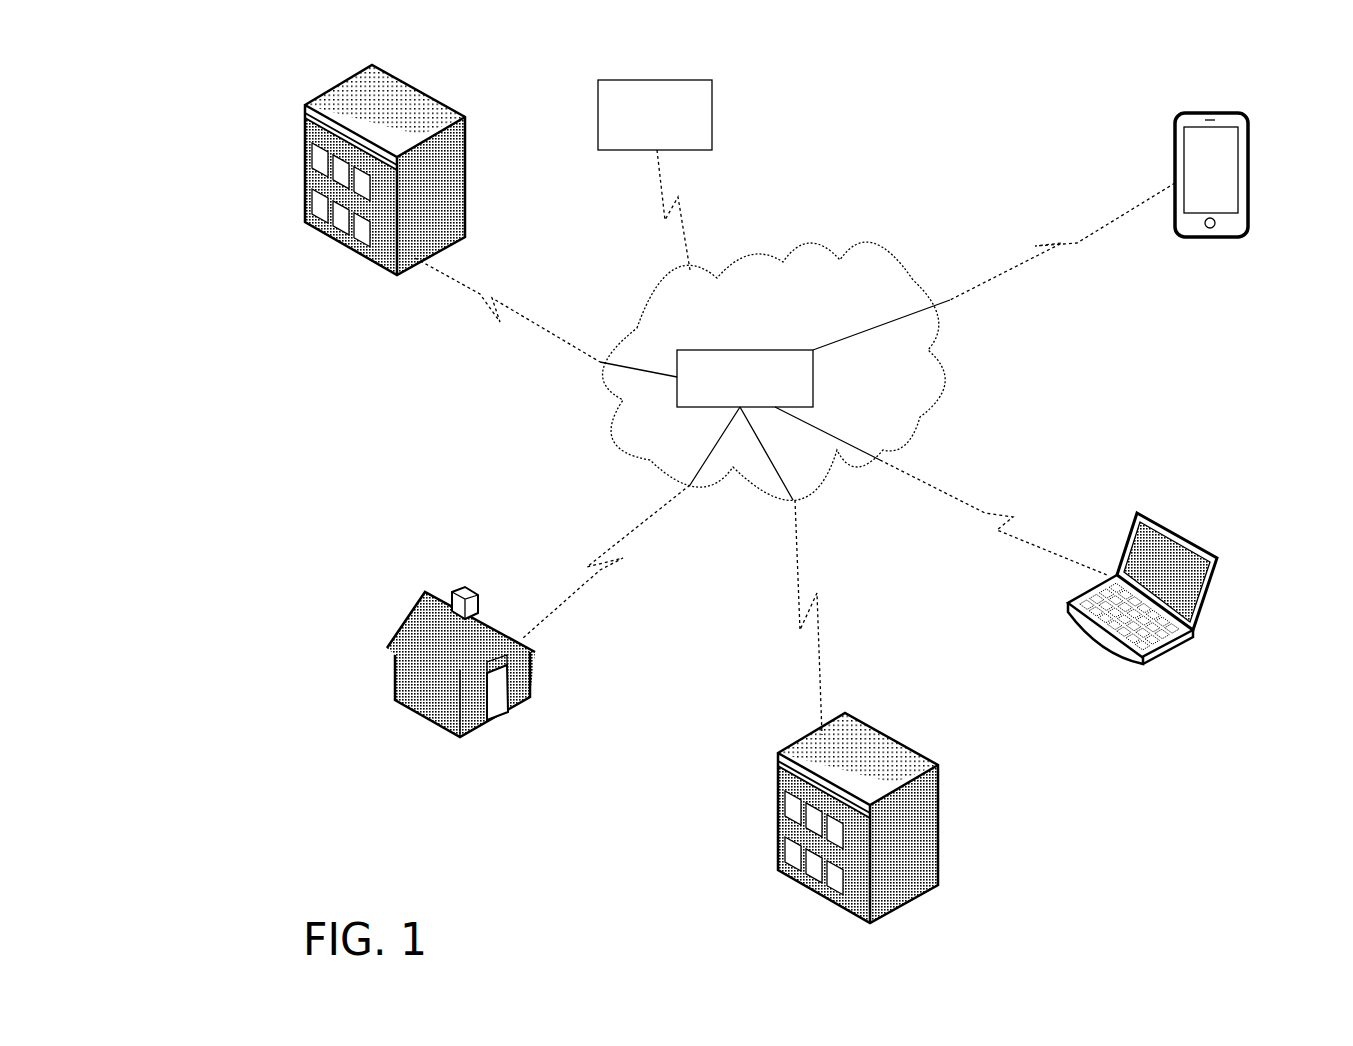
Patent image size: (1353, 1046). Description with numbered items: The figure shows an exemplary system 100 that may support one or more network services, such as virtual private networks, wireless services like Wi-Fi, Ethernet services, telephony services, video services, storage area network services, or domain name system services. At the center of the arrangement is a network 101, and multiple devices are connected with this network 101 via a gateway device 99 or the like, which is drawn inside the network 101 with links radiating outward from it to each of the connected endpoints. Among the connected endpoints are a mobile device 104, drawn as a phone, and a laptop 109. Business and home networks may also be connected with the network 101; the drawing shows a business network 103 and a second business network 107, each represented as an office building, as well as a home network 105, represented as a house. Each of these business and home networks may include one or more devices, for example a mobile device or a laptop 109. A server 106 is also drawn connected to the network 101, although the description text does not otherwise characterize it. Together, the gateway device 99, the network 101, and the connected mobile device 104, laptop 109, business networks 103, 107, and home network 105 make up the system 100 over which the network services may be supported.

The system 100 is at (164, 102).
The network 101 is at (747, 253).
The gateway device 99 is at (745, 378).
The server 106 is at (675, 139).
The business network 103 is at (340, 108).
The business network 107 is at (885, 753).
The mobile device 104 is at (1223, 112).
The laptop 109 is at (1185, 538).
The home network 105 is at (417, 602).